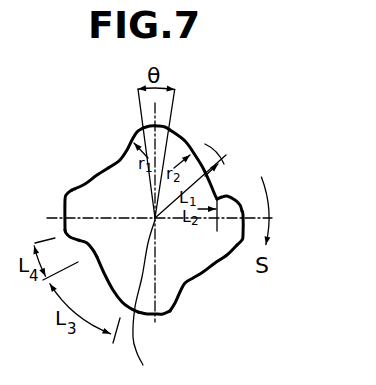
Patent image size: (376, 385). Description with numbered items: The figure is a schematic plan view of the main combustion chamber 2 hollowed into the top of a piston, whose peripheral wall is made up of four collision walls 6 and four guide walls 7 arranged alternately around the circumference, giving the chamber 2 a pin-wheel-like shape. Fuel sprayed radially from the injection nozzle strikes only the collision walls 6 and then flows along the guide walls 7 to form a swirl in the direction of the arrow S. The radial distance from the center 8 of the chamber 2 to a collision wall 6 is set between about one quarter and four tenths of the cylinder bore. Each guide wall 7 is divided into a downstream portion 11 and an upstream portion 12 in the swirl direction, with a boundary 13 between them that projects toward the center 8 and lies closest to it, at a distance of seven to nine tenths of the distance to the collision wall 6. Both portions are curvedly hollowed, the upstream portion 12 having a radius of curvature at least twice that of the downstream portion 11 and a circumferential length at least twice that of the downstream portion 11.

The main combustion chamber 2 is at (174, 246).
The collision wall 6 is at (170, 130).
The guide wall 7 is at (174, 222).
The center of the chamber 8 is at (144, 300).
The downstream portion 11 is at (260, 160).
The upstream portion 12 is at (258, 124).
The boundary 13 is at (282, 113).